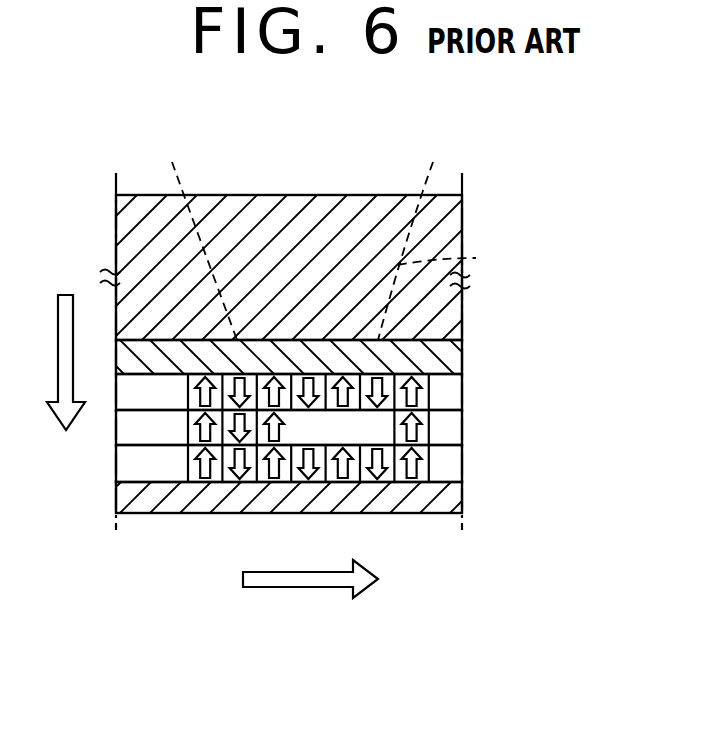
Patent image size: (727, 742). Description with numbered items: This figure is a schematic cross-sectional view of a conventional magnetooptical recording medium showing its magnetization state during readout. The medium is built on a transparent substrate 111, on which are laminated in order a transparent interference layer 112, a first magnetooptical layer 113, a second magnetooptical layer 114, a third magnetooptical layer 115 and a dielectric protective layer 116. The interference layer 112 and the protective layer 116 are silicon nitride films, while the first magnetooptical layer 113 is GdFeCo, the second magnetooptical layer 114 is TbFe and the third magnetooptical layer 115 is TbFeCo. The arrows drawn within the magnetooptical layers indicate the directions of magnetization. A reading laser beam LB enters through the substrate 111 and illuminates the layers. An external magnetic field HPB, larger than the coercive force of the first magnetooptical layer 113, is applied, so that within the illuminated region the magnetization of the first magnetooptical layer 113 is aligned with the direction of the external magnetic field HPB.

The transparent substrate 111 is at (276, 196).
The transparent interference layer 112 is at (445, 355).
The first magnetooptical layer 113 is at (462, 393).
The second magnetooptical layer 114 is at (455, 424).
The third magnetooptical layer 115 is at (462, 472).
The dielectric protective layer 116 is at (260, 513).
The beam of the laser beam for reading use LB is at (341, 251).
The external magnetic field HPB is at (56, 343).